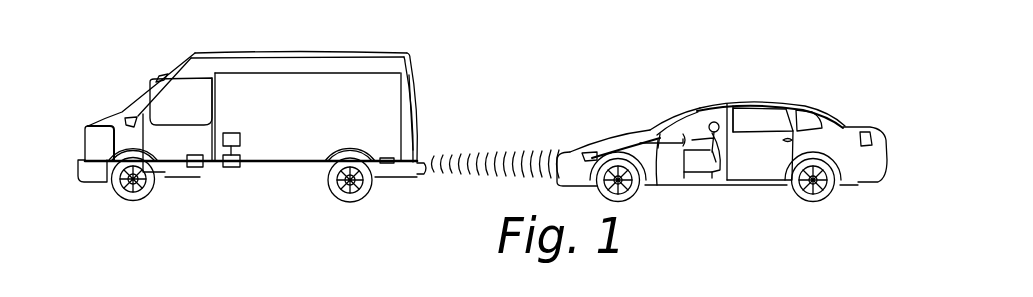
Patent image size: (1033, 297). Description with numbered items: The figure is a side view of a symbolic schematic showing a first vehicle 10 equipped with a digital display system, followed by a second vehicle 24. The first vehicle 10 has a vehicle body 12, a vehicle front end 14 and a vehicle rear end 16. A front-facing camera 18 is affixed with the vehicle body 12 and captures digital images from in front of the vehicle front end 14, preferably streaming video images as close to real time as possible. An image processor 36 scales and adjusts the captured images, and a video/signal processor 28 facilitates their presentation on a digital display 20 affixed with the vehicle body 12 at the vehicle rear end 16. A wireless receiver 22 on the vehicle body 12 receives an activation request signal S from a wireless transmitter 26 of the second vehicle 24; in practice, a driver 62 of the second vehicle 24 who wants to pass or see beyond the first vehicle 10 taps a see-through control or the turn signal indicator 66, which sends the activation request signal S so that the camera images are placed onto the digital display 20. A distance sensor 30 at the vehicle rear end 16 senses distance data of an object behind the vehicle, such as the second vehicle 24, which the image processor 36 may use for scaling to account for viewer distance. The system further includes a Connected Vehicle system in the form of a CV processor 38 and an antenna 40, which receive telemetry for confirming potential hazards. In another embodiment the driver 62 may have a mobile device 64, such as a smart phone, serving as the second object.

The first vehicle 10 is at (256, 52).
The vehicle body 12 is at (328, 93).
The vehicle front end 14 is at (78, 143).
The vehicle rear end 16 is at (419, 97).
The front-facing camera 18 is at (89, 125).
The digital display 20 is at (420, 128).
The wireless receiver 22 is at (426, 172).
The second vehicle 24 is at (707, 105).
The wireless transmitter 26 is at (571, 159).
The video/signal processor 28 is at (389, 158).
The distance sensor 30 is at (418, 177).
The image processor 36 is at (194, 168).
The CV processor 38 is at (232, 168).
The antenna 40 is at (241, 140).
The activation request signal S is at (517, 150).
The driver 62 is at (727, 124).
The mobile device 64 is at (718, 178).
The turn signal indicator 66 is at (659, 137).